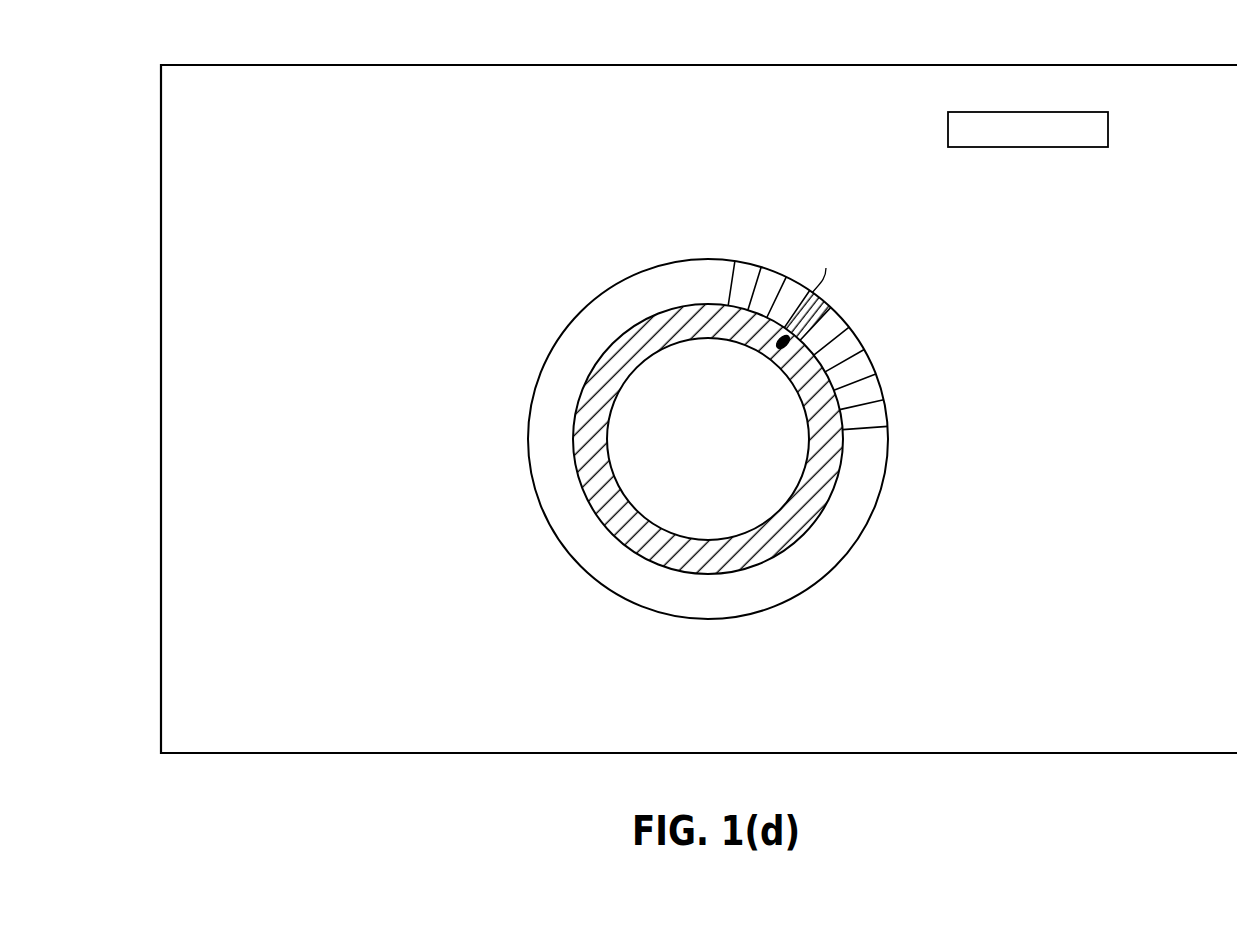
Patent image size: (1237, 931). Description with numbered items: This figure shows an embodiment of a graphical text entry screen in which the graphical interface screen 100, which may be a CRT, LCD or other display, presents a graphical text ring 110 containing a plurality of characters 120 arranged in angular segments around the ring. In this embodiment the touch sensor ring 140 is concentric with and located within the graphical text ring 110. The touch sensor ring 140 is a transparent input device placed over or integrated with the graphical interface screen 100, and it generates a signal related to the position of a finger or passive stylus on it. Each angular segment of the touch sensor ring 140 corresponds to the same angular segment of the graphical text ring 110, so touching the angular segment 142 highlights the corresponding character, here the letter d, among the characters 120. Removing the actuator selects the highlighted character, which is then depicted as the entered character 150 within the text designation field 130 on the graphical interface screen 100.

The graphical interface screen 100 is at (719, 64).
The graphical text entry ring 110 is at (529, 438).
The characters 120 is at (778, 272).
The text designation field 130 is at (1108, 128).
The touch sensor ring 140 is at (646, 328).
The angular segment 142 is at (778, 347).
The entered character d 150 is at (968, 130).